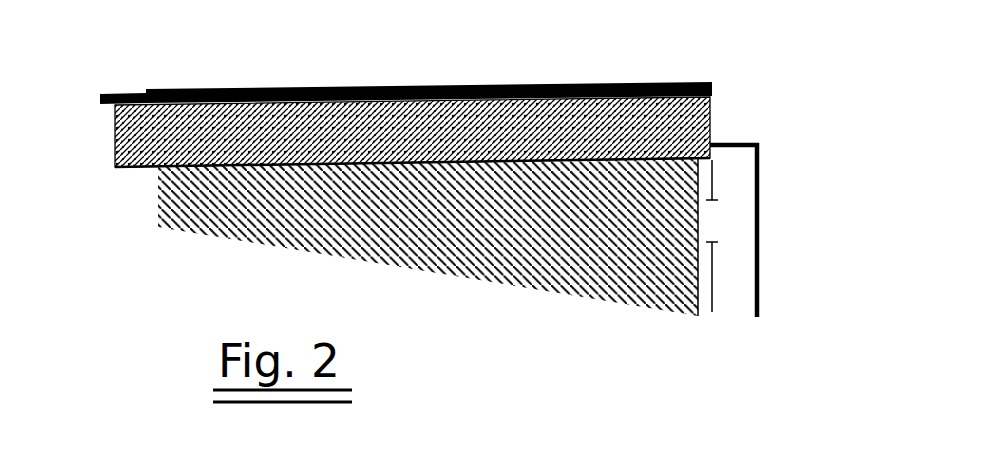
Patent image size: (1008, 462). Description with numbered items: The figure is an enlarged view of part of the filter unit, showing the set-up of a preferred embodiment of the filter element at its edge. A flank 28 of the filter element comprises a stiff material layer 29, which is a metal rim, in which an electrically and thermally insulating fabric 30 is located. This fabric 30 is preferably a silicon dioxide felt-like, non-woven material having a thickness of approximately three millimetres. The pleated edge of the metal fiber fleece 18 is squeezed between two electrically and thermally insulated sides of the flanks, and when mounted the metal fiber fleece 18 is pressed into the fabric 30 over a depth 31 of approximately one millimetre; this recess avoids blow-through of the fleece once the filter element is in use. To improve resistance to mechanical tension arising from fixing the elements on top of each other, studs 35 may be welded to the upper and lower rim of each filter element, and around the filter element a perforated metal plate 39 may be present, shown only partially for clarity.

The metal fiber fleece 18 is at (428, 262).
The flank 28 is at (805, 108).
The stiff material layer 29 is at (406, 52).
The electrically and thermally insulating fabric 30 is at (412, 84).
The depth 31 is at (111, 127).
The stud 35 is at (788, 231).
The perforated metal plate 39 is at (786, 239).